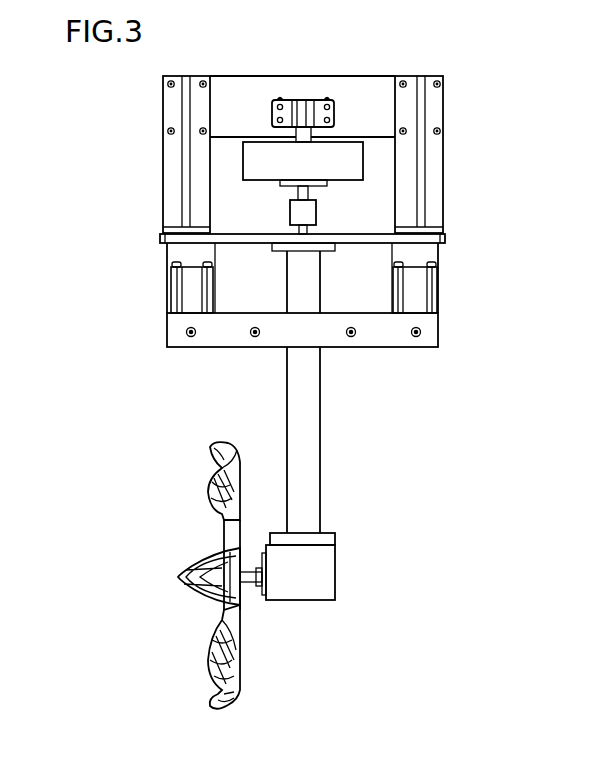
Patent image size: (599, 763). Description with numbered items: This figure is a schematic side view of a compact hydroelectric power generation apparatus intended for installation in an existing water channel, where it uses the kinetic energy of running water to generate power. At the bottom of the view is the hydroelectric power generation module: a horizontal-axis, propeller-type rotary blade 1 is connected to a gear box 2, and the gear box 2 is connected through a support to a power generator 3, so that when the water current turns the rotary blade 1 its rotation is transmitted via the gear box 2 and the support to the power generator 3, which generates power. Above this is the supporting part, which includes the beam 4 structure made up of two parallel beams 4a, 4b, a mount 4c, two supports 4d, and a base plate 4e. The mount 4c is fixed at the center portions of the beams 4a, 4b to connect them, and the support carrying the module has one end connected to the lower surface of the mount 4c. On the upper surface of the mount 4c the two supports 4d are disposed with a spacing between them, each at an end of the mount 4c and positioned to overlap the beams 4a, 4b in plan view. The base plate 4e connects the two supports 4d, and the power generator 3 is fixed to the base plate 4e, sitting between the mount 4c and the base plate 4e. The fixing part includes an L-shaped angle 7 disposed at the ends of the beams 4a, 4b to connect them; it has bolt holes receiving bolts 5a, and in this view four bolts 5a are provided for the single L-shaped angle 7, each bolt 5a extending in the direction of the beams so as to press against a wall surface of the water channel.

The rotary blade 1 is at (226, 528).
The gear box 2 is at (313, 598).
The power generator 3 is at (255, 155).
The beam 4 is at (113, 238).
The beam 4a is at (190, 297).
The beam 4b is at (415, 277).
The mount 4c is at (355, 236).
The support 4d is at (176, 152).
The base plate 4e is at (357, 88).
The bolt 5a is at (192, 338).
The L-shaped angle 7 is at (386, 330).